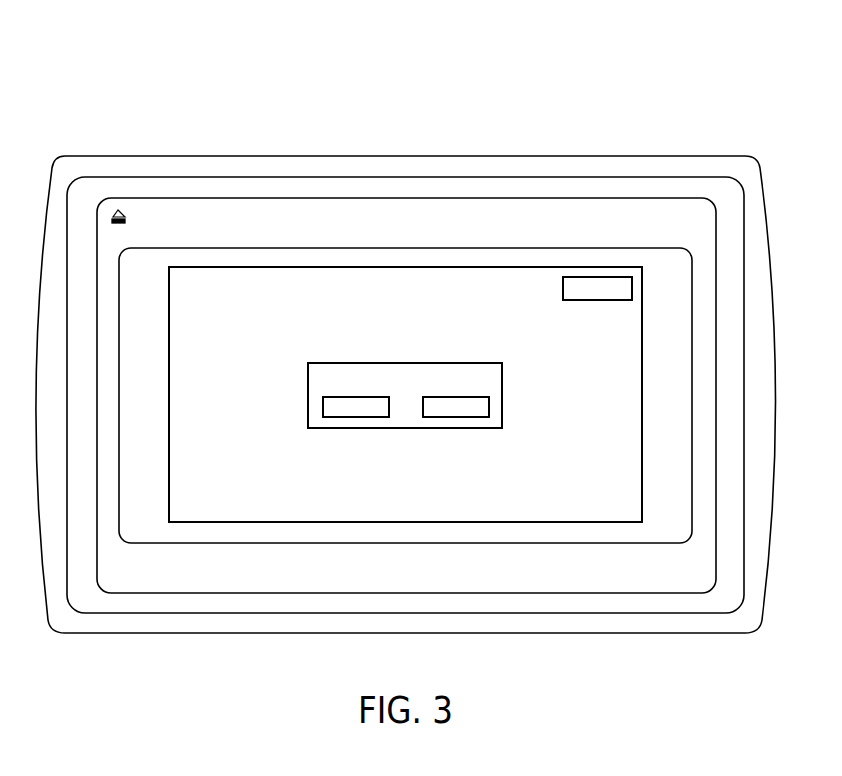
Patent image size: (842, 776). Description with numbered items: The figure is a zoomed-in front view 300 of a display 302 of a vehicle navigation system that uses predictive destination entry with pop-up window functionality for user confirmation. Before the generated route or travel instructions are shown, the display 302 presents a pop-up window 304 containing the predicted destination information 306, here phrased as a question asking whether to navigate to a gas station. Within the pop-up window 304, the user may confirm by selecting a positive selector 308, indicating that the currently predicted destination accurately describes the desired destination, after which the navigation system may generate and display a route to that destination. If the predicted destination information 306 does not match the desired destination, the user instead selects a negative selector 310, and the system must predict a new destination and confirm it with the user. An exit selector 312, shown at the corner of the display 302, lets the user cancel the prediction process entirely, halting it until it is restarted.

The zoomed-in front view 300 is at (694, 89).
The display 302 is at (580, 488).
The pop-up window 304 is at (454, 363).
The predicted destination information 306 is at (495, 378).
The positive selector 308 is at (359, 418).
The negative selector 310 is at (454, 418).
The exit selector 312 is at (598, 300).